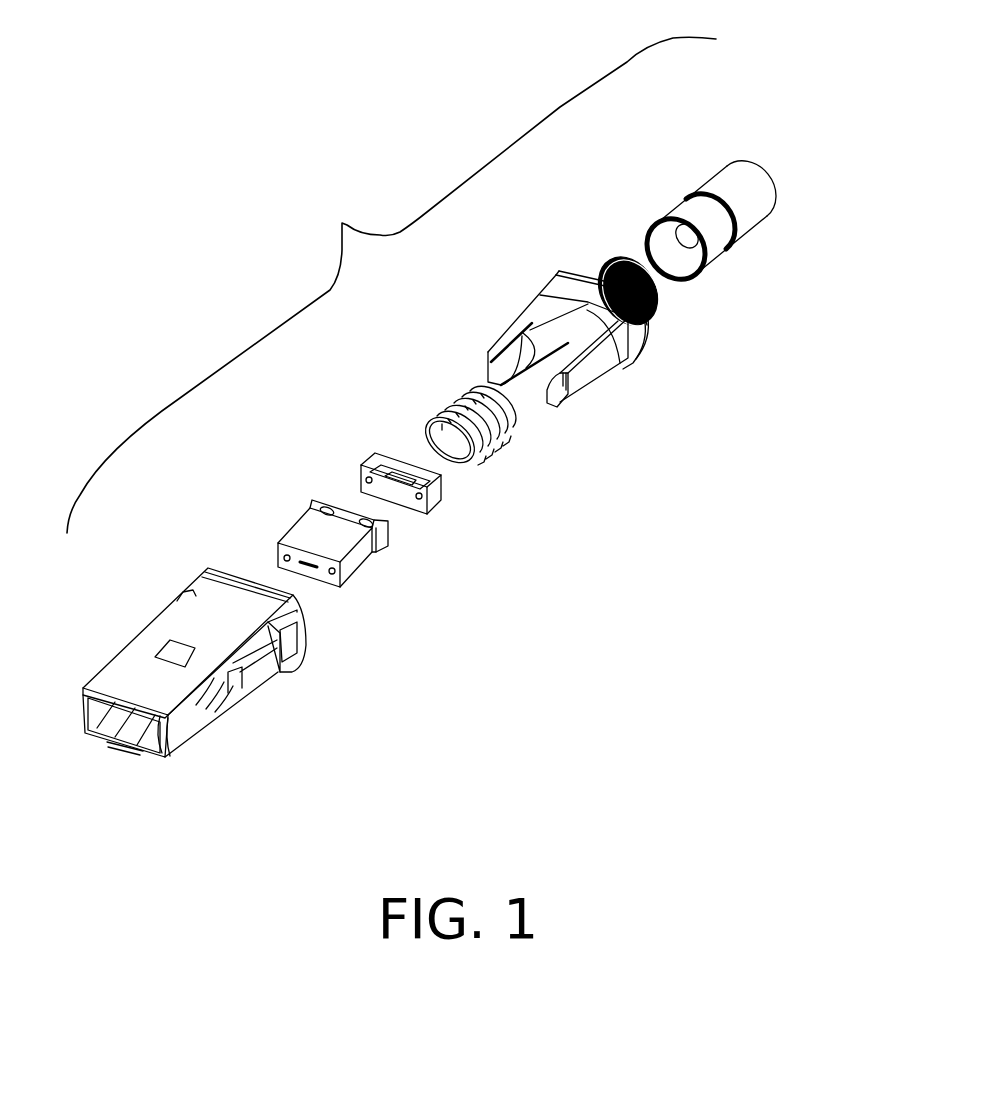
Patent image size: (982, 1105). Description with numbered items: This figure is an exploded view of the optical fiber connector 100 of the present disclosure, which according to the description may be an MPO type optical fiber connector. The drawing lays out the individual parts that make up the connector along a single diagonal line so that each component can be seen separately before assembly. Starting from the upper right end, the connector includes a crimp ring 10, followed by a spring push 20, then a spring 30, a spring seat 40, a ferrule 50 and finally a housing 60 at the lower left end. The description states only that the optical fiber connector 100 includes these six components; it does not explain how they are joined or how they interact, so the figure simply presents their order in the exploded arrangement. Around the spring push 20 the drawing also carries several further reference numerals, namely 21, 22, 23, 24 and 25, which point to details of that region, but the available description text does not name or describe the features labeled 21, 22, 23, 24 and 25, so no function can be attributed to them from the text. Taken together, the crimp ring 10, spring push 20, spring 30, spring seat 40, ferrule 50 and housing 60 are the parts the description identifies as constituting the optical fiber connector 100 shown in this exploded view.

The optical fiber connector 100 is at (391, 285).
The crimp ring 10 is at (699, 203).
The spring push 20 is at (564, 311).
The flange 21 is at (554, 270).
The sealing ring 22 is at (642, 251).
The ring edge 23 is at (656, 309).
The arm 24 is at (500, 339).
The cylindrical boss 25 is at (591, 309).
The spring 30 is at (450, 409).
The spring seat 40 is at (373, 460).
The ferrule 50 is at (304, 522).
The housing 60 is at (138, 660).